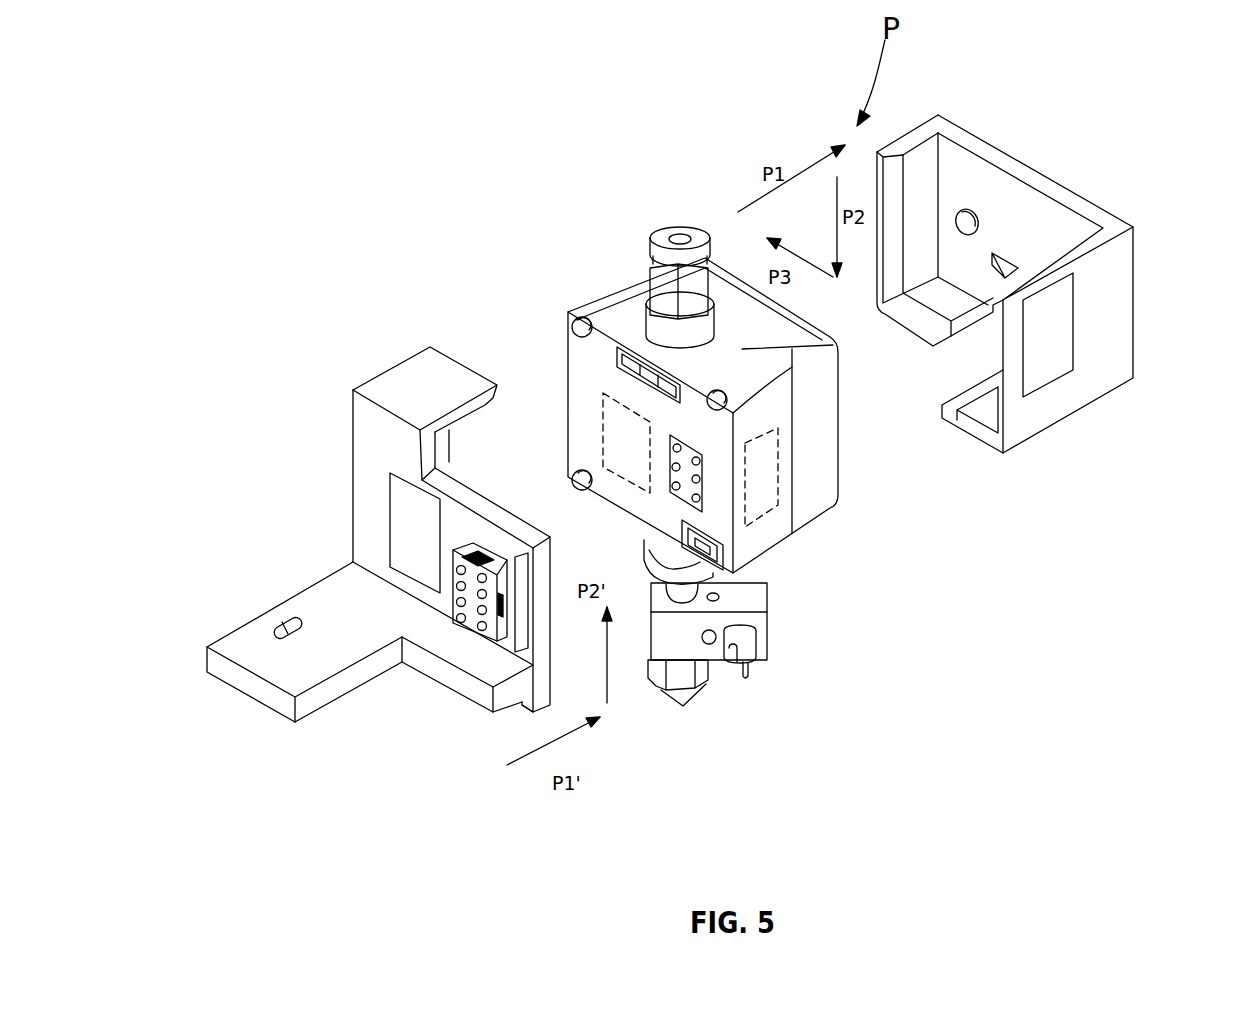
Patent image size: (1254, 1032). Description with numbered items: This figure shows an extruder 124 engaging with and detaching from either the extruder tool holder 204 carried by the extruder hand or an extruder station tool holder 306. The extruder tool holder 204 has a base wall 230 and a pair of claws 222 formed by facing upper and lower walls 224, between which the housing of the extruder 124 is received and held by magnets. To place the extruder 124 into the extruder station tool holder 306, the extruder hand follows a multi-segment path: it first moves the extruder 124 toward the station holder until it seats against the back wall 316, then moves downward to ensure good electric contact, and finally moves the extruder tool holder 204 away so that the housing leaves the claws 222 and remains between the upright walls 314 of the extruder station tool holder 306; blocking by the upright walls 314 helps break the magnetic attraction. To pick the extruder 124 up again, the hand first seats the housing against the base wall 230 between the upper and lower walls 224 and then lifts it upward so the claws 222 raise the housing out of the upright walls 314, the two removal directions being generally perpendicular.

The extruder 124 is at (655, 206).
The extruder tool holder 204 is at (328, 472).
The claws 222 is at (451, 467).
The upper and lower walls 224 is at (413, 350).
The base wall 230 is at (367, 552).
The extruder station tool holder 306 is at (1053, 286).
The upright walls 314 is at (905, 142).
The back wall 316 is at (1100, 216).